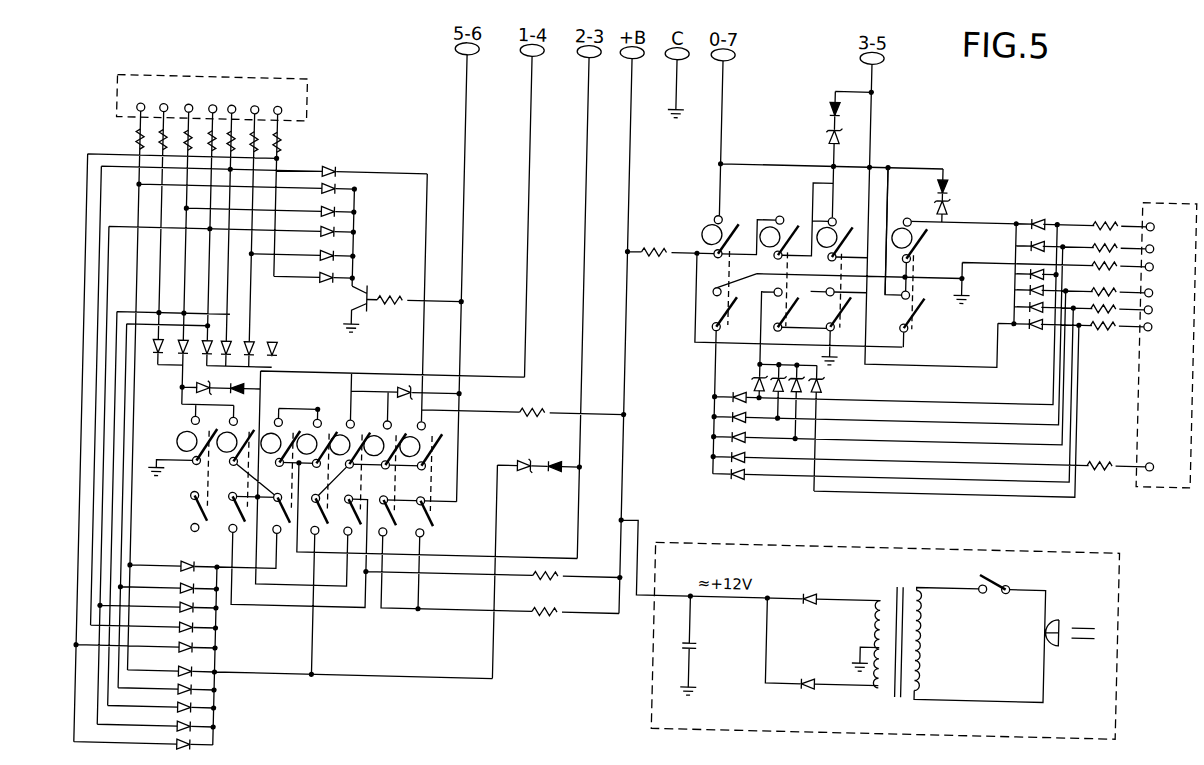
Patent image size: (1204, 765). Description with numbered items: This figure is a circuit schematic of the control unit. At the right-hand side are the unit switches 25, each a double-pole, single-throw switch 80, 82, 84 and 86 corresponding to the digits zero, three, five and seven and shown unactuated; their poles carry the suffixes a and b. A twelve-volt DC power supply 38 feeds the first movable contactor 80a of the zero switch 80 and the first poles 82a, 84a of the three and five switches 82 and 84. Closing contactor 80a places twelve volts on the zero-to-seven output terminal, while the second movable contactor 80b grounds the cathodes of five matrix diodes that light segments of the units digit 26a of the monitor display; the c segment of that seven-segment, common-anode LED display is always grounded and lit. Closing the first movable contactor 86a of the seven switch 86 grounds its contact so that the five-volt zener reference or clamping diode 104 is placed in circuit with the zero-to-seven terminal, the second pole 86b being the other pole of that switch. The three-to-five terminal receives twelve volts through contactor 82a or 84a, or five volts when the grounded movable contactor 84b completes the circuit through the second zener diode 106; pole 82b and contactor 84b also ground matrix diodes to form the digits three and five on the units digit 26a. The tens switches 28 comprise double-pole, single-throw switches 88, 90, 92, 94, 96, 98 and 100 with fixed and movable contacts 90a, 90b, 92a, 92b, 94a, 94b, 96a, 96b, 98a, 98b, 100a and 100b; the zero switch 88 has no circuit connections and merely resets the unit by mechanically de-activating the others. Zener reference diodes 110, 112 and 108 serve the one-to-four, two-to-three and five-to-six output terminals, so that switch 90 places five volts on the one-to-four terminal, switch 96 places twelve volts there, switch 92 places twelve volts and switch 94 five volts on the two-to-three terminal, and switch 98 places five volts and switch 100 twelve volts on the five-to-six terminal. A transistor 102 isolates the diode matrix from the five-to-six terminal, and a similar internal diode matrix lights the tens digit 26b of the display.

The tens digit of the monitor display 26b is at (205, 86).
The units digit of the monitor display 26a is at (1147, 190).
The transistor 102 is at (360, 298).
The zener reference or clamping diode 110 is at (203, 389).
The zener reference or clamping diode 108 is at (400, 394).
The zener reference or clamping diode 112 is at (525, 472).
The "0" tens switch 88 is at (183, 427).
The tens switch 90 is at (248, 432).
The fixed contact 90a is at (262, 440).
The movable contact 90b is at (236, 529).
The tens switch 92 is at (283, 430).
The fixed contact 92a is at (281, 494).
The movable contact 92b is at (291, 542).
The tens switch 94 is at (322, 430).
The fixed contact 94a is at (333, 546).
The movable contact 94b is at (332, 486).
The tens switch 96 is at (360, 432).
The fixed contact 96a is at (368, 497).
The movable contact 96b is at (380, 535).
The tens switch 98 is at (401, 432).
The fixed contact 98a is at (403, 498).
The movable contact 98b is at (400, 528).
The tens switch 100 is at (429, 437).
The fixed contact 100a is at (438, 446).
The movable contact 100b is at (436, 522).
The tens switches 28 is at (432, 479).
The "0" units switch 80 is at (703, 210).
The first movable contactor 80a is at (736, 223).
The second movable contactor 80b is at (718, 305).
The "3" units switch 82 is at (777, 216).
The first terminal or pole 82a is at (793, 229).
The second pole 82b is at (804, 310).
The "5" units switch 84 is at (824, 216).
The first movable contactor 84a is at (846, 222).
The movable contactor 84b is at (848, 317).
The "7" units switch 86 is at (931, 249).
The first movable contactor 86a is at (912, 230).
The second pole 86b is at (918, 316).
The second zener reference or clamping diode 106 is at (833, 127).
The zener reference or clamping diode 104 is at (940, 198).
The unit switches 25 is at (901, 180).
The +12 volt DC power supply 38 is at (961, 541).